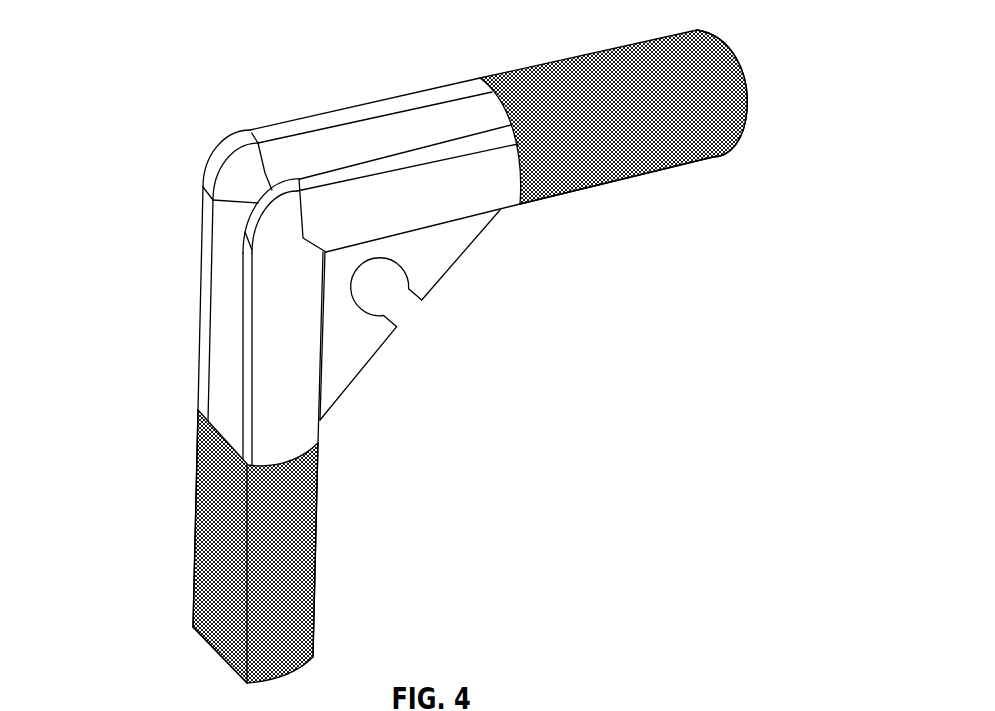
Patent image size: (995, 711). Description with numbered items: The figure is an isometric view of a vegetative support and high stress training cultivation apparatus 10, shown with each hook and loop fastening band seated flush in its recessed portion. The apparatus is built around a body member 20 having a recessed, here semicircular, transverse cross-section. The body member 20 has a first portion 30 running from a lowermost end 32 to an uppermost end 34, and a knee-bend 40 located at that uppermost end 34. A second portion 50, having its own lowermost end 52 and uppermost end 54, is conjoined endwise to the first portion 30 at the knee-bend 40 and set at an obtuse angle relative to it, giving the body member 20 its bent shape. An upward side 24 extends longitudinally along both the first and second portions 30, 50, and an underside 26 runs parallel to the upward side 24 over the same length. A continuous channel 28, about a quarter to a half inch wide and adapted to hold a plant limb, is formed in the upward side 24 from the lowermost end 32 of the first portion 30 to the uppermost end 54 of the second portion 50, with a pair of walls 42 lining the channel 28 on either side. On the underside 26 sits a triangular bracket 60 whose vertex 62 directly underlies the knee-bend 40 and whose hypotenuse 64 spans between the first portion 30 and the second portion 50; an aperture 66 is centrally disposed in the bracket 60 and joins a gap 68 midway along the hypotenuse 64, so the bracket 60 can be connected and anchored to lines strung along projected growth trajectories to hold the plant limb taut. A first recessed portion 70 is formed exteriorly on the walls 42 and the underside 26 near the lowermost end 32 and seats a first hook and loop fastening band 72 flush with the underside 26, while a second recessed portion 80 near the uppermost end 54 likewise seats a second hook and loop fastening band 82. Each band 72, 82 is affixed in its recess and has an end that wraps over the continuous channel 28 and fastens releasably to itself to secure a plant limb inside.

The vegetative support and high stress training cultivation apparatus 10 is at (427, 361).
The body member 20 is at (306, 251).
The upward side 24 is at (334, 102).
The underside 26 is at (475, 264).
The continuous channel 28 is at (231, 310).
The first portion 30 is at (179, 522).
The lowermost end 32 is at (260, 683).
The uppermost end 34 is at (172, 210).
The knee-bend 40 is at (212, 129).
The pair of walls 42 is at (427, 158).
The second portion 50 is at (638, 119).
The lowermost end 52 is at (267, 133).
The uppermost end 54 is at (736, 35).
The triangular bracket 60 is at (410, 327).
The vertex 62 is at (330, 263).
The hypotenuse 64 is at (364, 370).
The aperture 66 is at (363, 301).
The gap 68 is at (423, 323).
The first recessed portion 70 is at (251, 560).
The first hook and loop fastening band 72 is at (317, 610).
The second recessed portion 80 is at (701, 180).
The second hook and loop fastening band 82 is at (746, 123).